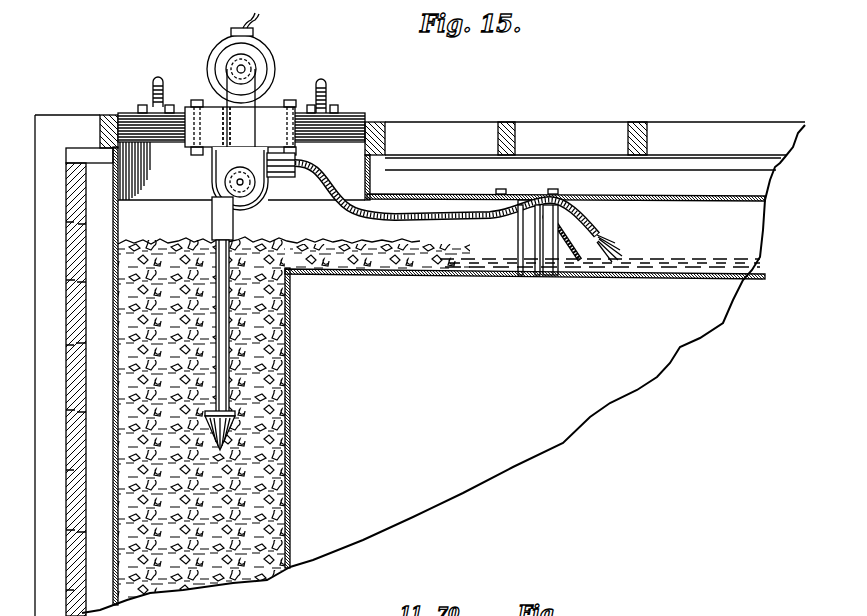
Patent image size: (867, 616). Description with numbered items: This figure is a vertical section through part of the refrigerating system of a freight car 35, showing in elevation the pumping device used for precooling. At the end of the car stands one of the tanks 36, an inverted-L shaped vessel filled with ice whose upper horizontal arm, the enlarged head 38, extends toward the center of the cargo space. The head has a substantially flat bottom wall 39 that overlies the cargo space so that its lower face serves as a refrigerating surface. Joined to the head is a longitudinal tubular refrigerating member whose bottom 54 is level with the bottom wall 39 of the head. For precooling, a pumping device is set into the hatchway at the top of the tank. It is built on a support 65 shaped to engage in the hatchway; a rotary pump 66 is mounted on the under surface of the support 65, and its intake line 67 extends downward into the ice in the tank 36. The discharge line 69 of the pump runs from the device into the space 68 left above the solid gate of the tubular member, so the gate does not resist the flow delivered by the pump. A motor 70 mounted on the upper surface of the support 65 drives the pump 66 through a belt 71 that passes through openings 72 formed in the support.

The freight car 35 is at (67, 333).
The tank 36 is at (292, 399).
The enlarged head 38 is at (490, 243).
The bottom wall 39 is at (421, 275).
The bottom of tubular member 54 is at (636, 280).
The support 65 is at (358, 121).
The rotary pump 66 is at (256, 204).
The intake line 67 is at (220, 367).
The space 68 is at (558, 202).
The discharge line 69 is at (468, 205).
The motor 70 is at (272, 92).
The belt 71 is at (258, 78).
The opening 72 is at (210, 105).